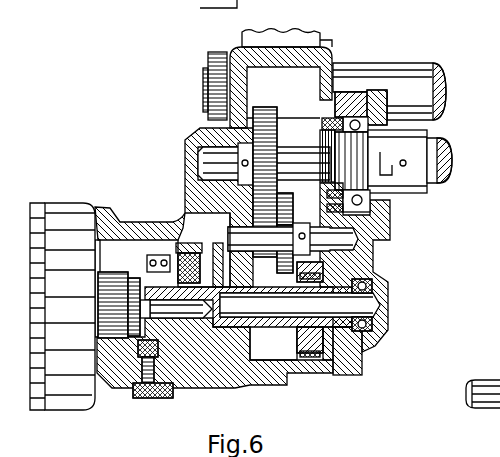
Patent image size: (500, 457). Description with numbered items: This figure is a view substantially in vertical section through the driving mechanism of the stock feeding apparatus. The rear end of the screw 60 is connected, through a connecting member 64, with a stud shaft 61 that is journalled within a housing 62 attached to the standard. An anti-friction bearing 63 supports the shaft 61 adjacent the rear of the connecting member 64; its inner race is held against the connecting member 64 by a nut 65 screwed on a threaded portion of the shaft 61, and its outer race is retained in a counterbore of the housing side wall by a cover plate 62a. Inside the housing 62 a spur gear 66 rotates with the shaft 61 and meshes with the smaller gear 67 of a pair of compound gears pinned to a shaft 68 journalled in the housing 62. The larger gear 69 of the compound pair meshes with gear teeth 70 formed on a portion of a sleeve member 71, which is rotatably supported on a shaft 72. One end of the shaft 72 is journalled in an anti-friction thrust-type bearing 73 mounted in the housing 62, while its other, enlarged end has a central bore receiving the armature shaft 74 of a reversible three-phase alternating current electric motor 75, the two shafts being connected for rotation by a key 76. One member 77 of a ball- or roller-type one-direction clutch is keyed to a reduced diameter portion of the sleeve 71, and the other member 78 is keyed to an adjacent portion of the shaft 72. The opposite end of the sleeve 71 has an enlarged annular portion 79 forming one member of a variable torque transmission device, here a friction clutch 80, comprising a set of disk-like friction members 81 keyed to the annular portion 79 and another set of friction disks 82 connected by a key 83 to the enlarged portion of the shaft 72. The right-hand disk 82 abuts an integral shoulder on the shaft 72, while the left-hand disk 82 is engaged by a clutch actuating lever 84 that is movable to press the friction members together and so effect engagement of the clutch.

The screw 60 is at (441, 140).
The stud shaft 61 is at (305, 152).
The housing 62 is at (190, 176).
The cover plate 62a is at (392, 90).
The anti-friction bearing 63 is at (388, 212).
The connecting member 64 is at (418, 197).
The nut 65 is at (326, 192).
The spur gear 66 is at (262, 108).
The smaller gear 67 is at (283, 262).
The shaft 68 is at (378, 256).
The larger gear 69 is at (293, 214).
The gear teeth 70 is at (300, 340).
The sleeve member 71 is at (243, 386).
The shaft 72 is at (350, 332).
The anti-friction thrust-type bearing 73 is at (387, 327).
The armature shaft 74 is at (148, 308).
The electric motor 75 is at (70, 402).
The key 76 is at (168, 314).
The one-direction clutch member 77 is at (308, 362).
The one-direction clutch member 78 is at (328, 378).
The enlarged annular portion 79 is at (240, 386).
The friction clutch 80 is at (192, 243).
The friction members 81 is at (199, 380).
The friction members 82 is at (180, 382).
The key 83 is at (148, 276).
The clutch actuating lever 84 is at (133, 362).